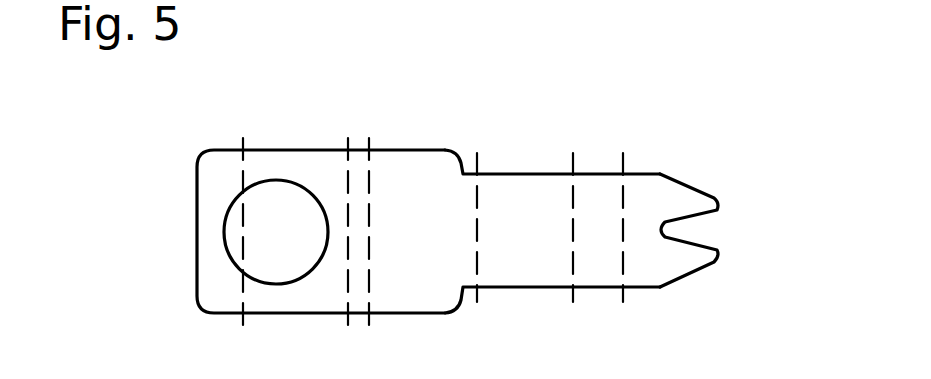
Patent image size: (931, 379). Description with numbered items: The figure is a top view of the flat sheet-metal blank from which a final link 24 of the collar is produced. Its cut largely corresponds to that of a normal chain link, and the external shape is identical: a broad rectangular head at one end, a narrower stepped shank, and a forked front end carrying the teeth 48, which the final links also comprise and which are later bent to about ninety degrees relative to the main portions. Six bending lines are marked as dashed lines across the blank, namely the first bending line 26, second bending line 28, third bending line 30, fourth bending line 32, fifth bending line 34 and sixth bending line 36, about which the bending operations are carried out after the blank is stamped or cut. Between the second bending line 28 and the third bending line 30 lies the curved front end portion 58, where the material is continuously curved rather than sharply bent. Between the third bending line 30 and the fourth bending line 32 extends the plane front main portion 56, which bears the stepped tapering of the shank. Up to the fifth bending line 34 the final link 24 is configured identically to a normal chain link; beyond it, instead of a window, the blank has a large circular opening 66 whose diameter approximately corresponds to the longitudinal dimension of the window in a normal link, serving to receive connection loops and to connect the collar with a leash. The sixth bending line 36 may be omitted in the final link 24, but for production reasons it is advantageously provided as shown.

The final link 24 is at (447, 215).
The first bending line 26 is at (623, 160).
The second bending line 28 is at (573, 160).
The third bending line 30 is at (477, 160).
The fourth bending line 32 is at (370, 145).
The fifth bending line 34 is at (348, 145).
The sixth bending line 36 is at (242, 144).
The teeth 48 is at (683, 203).
The front main portion 56 is at (285, 148).
The curved front end portion 58 is at (467, 308).
The large opening 66 is at (229, 224).